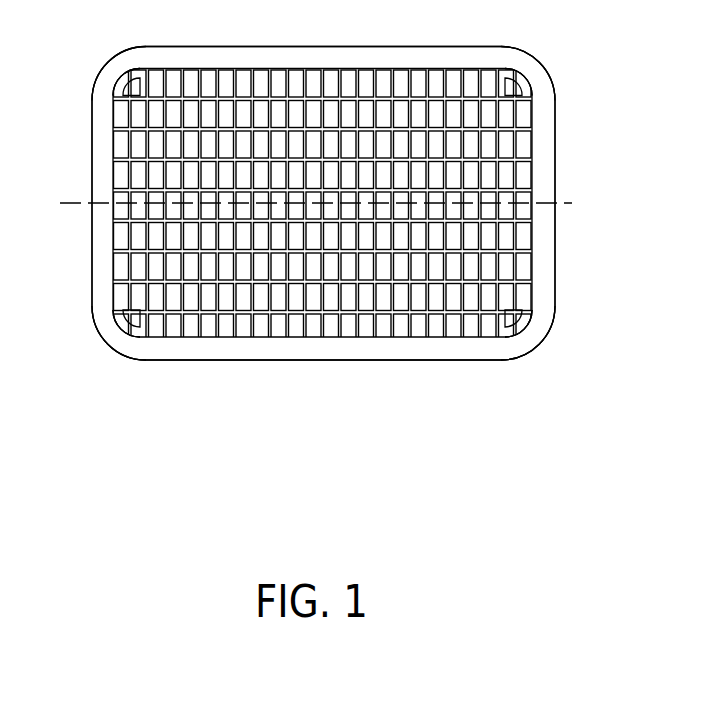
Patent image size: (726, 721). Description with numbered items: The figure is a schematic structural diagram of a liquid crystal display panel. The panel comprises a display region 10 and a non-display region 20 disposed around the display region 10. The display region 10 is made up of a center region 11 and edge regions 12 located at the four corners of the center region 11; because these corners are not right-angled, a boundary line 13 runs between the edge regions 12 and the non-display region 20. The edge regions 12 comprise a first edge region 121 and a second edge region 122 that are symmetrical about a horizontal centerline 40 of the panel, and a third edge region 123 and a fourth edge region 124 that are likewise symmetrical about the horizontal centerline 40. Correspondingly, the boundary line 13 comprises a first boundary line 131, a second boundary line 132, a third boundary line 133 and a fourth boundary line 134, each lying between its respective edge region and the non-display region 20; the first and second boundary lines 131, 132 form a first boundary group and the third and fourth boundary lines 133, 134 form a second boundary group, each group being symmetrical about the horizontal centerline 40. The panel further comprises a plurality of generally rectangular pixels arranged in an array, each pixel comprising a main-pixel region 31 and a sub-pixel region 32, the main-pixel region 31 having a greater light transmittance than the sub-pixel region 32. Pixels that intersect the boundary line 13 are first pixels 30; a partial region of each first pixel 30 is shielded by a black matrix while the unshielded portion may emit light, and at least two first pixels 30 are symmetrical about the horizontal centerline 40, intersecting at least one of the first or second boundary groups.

The display region 10 is at (301, 265).
The center region 11 is at (220, 77).
The edge regions 12 is at (88, 516).
The first edge region 121 is at (515, 83).
The second edge region 122 is at (513, 323).
The third edge region 123 is at (123, 90).
The fourth edge region 124 is at (125, 324).
The boundary line 13 is at (208, 516).
The first boundary line 131 is at (528, 92).
The second boundary line 132 is at (520, 317).
The third boundary line 133 is at (100, 108).
The fourth boundary line 134 is at (124, 322).
The non-display region 20 is at (543, 147).
The first pixels 30 is at (322, 266).
The main-pixel region 31 is at (498, 92).
The sub-pixel region 32 is at (506, 76).
The horizontal centerline 40 is at (560, 203).